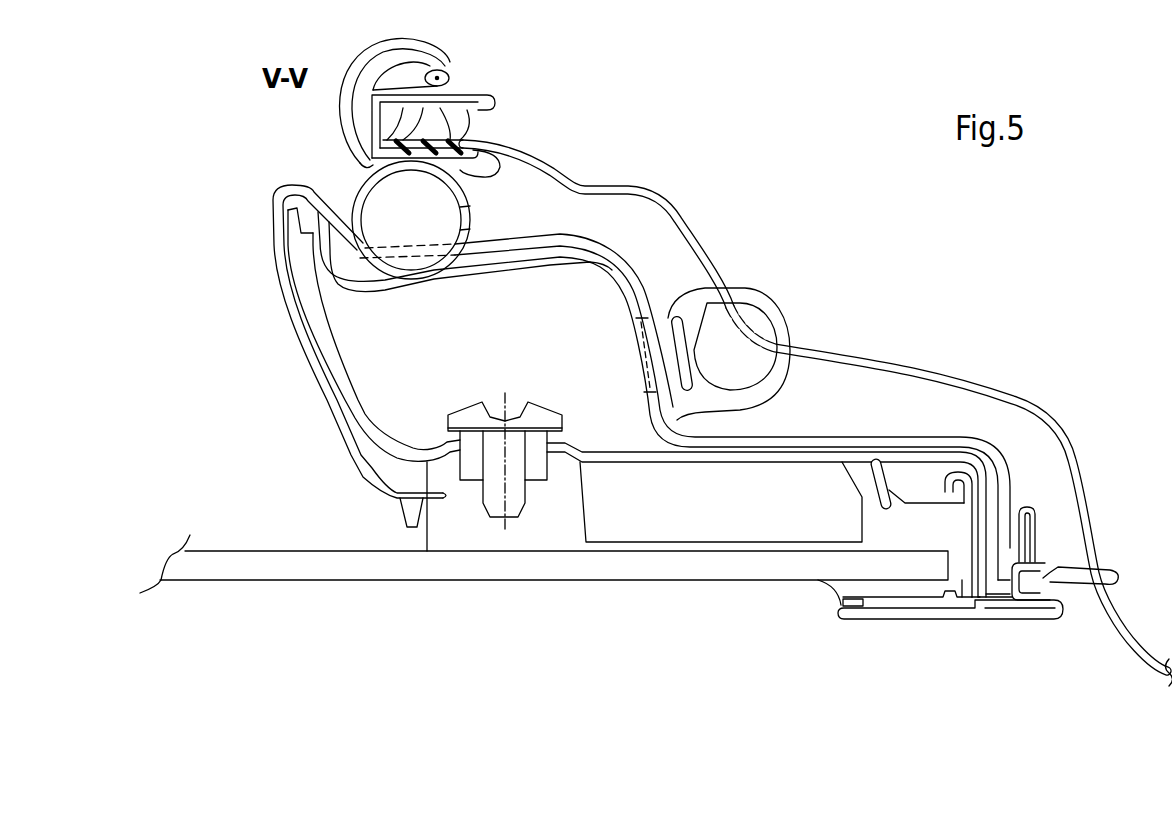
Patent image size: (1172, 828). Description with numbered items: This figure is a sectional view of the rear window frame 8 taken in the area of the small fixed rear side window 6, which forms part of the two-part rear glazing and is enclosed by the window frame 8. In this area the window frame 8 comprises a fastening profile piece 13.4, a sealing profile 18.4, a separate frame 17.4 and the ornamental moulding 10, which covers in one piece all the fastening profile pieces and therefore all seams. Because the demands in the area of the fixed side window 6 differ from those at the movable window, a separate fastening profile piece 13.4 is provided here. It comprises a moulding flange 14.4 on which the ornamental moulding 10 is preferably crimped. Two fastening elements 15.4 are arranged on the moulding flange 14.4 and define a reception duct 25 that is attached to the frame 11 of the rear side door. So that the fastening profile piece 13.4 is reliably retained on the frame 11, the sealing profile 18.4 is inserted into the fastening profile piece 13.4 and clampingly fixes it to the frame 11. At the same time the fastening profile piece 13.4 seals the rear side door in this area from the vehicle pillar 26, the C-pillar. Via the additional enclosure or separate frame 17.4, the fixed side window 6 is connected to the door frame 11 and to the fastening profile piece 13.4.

The fixed side window 6 is at (255, 567).
The window frame 8 is at (979, 645).
The ornamental moulding 10 is at (930, 619).
The frame 11 is at (847, 443).
The fastening profile piece 13.4 is at (1003, 609).
The moulding flange 14.4 is at (875, 608).
The fastening elements 15.4 is at (1030, 530).
The separate frame 17.4 is at (837, 588).
The sealing profile 18.4 is at (1043, 578).
The reception duct 25 is at (1014, 550).
The vehicle pillar 26 is at (912, 368).